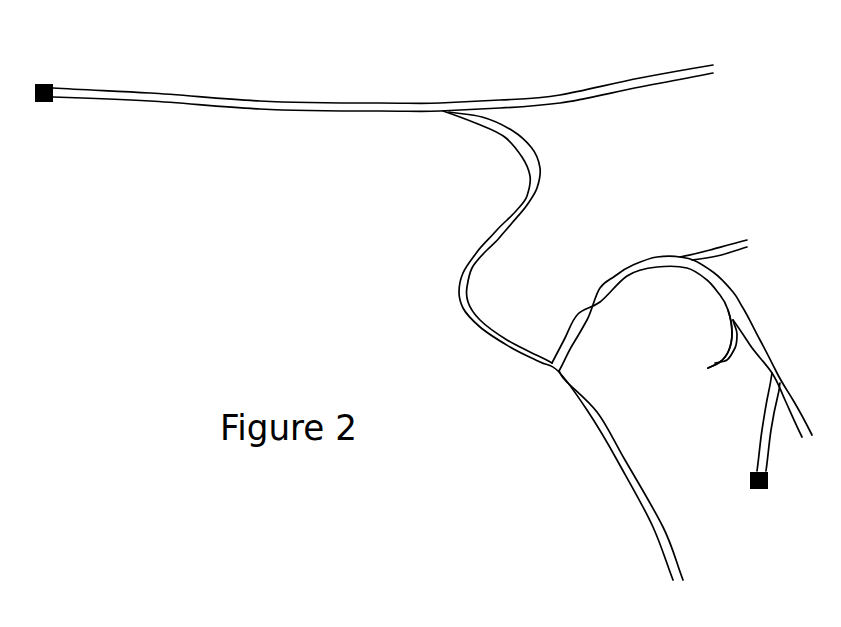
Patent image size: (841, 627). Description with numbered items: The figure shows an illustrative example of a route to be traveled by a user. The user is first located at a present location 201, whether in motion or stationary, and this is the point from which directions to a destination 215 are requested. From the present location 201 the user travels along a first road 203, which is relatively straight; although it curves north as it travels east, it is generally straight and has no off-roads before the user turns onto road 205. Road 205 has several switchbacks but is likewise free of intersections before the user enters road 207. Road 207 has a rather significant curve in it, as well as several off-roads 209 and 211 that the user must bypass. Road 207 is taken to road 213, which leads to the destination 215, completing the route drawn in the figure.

The present location 201 is at (42, 84).
The first road 203 is at (293, 102).
The road 205 is at (540, 175).
The road 207 is at (627, 285).
The off-road 209 is at (697, 256).
The off-road 211 is at (732, 321).
The road 213 is at (762, 428).
The destination 215 is at (768, 482).